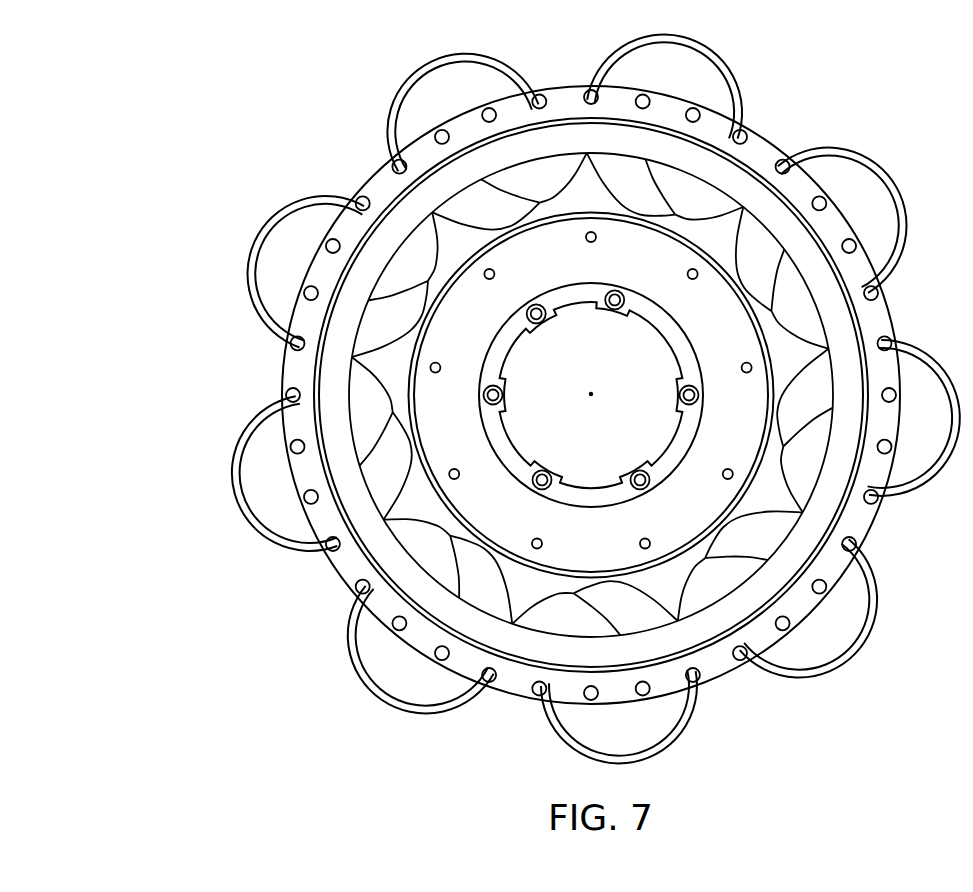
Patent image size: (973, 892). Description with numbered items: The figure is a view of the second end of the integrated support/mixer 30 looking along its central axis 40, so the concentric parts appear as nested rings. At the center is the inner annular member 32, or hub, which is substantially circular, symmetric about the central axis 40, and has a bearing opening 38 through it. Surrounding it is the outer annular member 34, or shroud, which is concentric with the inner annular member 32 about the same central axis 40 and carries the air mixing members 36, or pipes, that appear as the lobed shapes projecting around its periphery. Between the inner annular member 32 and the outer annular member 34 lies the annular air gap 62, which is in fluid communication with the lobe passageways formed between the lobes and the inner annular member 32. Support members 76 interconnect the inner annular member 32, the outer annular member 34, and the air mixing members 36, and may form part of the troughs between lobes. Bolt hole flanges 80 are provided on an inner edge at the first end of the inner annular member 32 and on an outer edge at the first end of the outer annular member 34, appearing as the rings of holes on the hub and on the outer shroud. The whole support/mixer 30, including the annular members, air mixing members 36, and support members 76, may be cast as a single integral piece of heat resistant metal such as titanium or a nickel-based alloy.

The support/mixer 30 is at (248, 155).
The inner annular member 32 is at (507, 530).
The outer annular member 34 is at (380, 548).
The air mixing members 36 is at (712, 72).
The bearing opening 38 is at (556, 380).
The central axis 40 is at (591, 391).
The annular air gap 62 is at (698, 578).
The support members 76 is at (707, 231).
The bolt hole flanges 80 is at (588, 91).